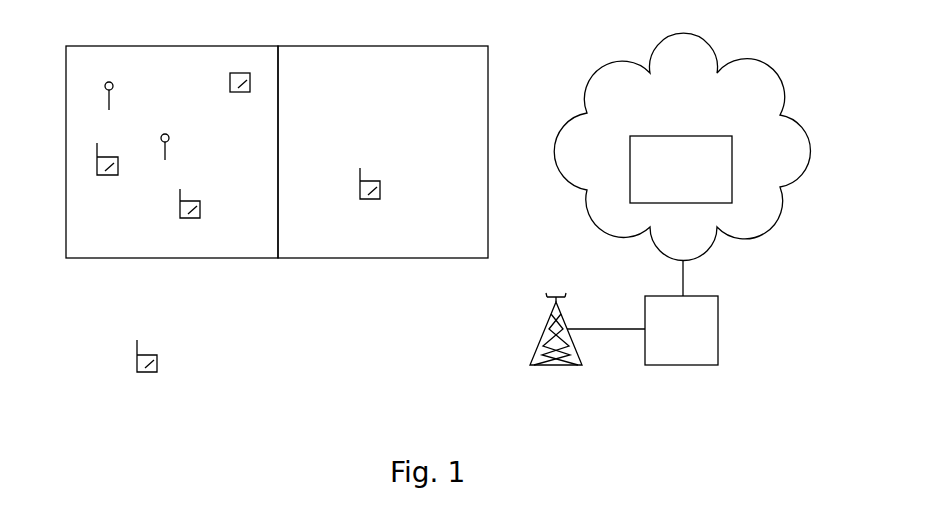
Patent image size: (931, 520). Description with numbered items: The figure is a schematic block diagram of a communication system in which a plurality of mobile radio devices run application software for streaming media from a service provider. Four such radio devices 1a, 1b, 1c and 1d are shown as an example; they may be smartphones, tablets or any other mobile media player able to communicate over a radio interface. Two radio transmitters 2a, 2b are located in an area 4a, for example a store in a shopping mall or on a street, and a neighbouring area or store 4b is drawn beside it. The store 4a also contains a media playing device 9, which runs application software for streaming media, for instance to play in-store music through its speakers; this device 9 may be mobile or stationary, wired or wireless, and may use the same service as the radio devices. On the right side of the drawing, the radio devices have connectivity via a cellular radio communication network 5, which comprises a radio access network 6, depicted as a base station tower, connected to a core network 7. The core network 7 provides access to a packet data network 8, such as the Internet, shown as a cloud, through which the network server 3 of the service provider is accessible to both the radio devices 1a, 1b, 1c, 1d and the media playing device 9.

The mobile radio device 1a is at (112, 176).
The mobile radio device 1b is at (200, 206).
The mobile radio device 1c is at (380, 186).
The mobile radio device 1d is at (157, 360).
The radio transmitter 2a is at (167, 148).
The radio transmitter 2b is at (110, 97).
The network server 3 is at (690, 169).
The area 4a is at (190, 238).
The neighbouring area 4b is at (396, 240).
The cellular radio communication network 5 is at (748, 338).
The radio access network 6 is at (576, 301).
The core network 7 is at (690, 327).
The packet data network 8 is at (657, 112).
The media playing device 9 is at (250, 80).